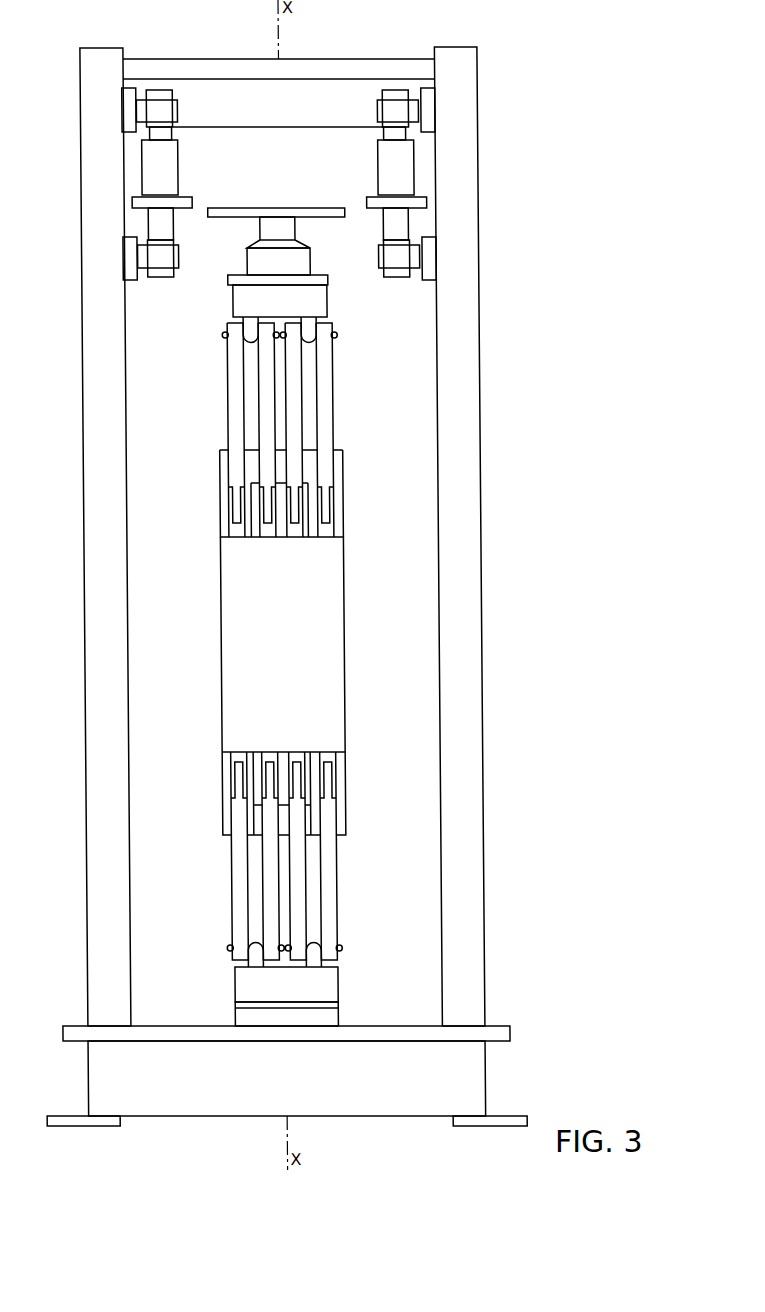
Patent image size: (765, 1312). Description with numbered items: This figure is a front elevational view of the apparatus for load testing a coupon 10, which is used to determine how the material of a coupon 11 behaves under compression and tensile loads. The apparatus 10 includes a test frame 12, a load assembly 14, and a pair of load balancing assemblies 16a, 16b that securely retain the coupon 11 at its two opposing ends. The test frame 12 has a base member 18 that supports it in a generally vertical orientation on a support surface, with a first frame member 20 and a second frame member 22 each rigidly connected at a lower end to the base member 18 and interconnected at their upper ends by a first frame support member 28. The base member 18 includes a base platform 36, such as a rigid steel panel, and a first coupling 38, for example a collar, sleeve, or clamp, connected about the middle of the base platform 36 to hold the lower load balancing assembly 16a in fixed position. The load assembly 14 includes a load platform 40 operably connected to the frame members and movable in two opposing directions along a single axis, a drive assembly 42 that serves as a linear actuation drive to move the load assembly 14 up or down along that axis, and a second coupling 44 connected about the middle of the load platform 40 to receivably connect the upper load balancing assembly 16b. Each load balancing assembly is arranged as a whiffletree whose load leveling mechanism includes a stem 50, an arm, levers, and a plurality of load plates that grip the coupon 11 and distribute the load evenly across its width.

The apparatus for load testing a coupon 10 is at (530, 74).
The coupon 11 is at (339, 640).
The test frame 12 is at (457, 638).
The load assembly 14 is at (355, 160).
The first load balancing assembly 16a is at (305, 888).
The second load balancing assembly 16b is at (292, 405).
The base member 18 is at (470, 1076).
The first frame member 20 is at (476, 782).
The second frame member 22 is at (86, 788).
The first frame support member 28 is at (368, 58).
The base platform 36 is at (420, 1026).
The first coupling 38 is at (232, 1020).
The load platform 40 is at (301, 124).
The drive assembly 42 is at (140, 151).
The second coupling 44 is at (330, 217).
The stem 50 is at (257, 223).